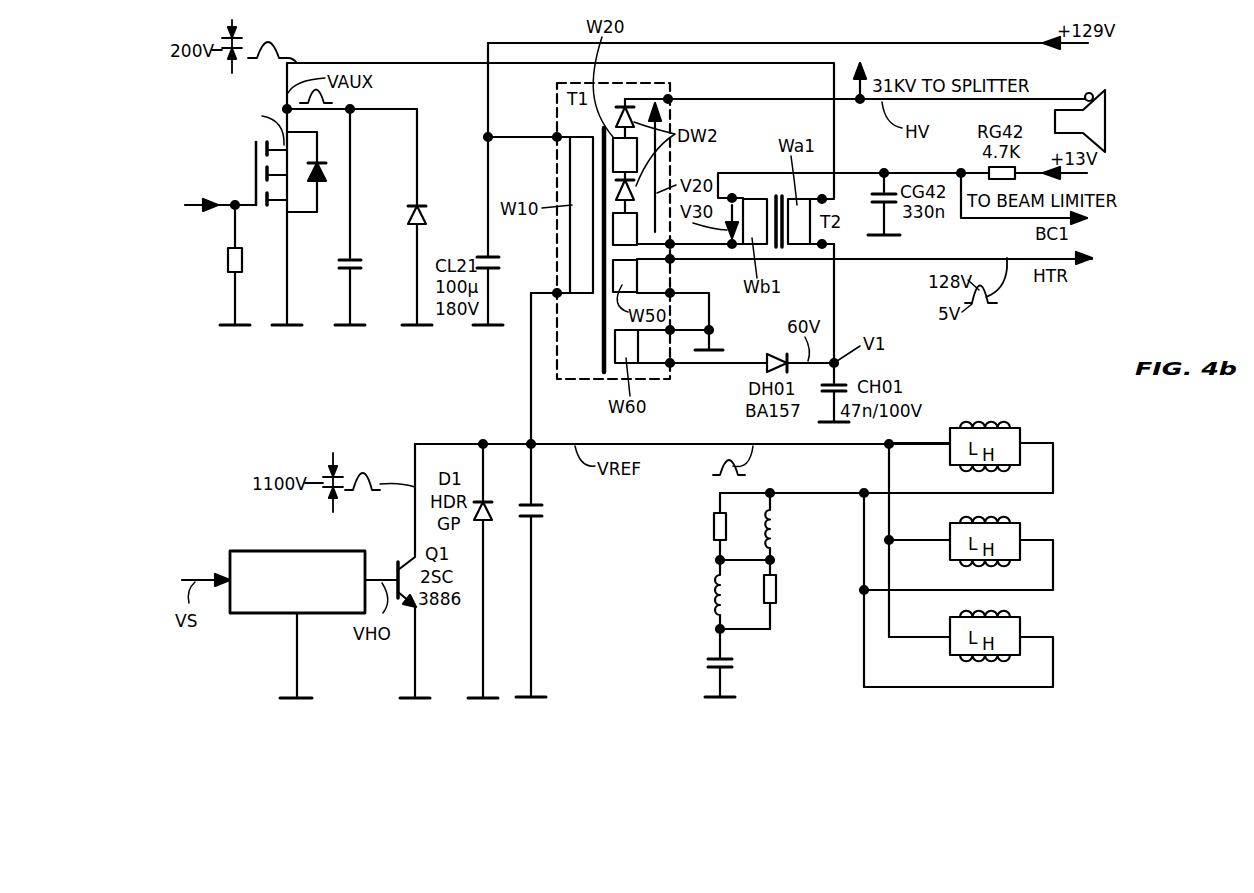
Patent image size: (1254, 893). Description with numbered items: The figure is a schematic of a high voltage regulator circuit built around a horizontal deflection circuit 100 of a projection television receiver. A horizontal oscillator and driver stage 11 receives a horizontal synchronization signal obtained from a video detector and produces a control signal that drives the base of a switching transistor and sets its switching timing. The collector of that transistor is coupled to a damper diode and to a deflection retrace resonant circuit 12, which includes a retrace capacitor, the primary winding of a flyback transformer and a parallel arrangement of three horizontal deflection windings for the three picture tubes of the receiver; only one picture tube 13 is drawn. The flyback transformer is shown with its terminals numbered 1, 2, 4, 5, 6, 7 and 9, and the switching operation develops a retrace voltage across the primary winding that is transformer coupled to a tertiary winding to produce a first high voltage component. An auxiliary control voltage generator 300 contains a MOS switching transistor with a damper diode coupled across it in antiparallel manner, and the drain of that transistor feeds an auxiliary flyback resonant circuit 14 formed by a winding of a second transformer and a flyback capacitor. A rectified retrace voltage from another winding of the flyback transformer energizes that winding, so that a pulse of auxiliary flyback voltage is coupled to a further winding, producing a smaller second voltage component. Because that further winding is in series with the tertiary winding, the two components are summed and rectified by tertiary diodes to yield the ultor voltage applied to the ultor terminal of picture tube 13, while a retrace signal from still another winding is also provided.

The horizontal oscillator and driver stage 11 is at (298, 551).
The deflection retrace resonant circuit 12 is at (652, 566).
The picture tube 13 is at (1100, 91).
The auxiliary flyback resonant circuit 14 is at (410, 105).
The horizontal deflection circuit 100 is at (632, 631).
The auxiliary control voltage generator 300 is at (333, 241).
The transformer T1 terminal 1 is at (680, 341).
The transformer T1 terminal 2 is at (527, 128).
The transformer T1 terminal 4 is at (852, 272).
The transformer T1 terminal 5 is at (675, 311).
The transformer T1 terminal 6 is at (550, 285).
The transformer T1 terminal 7 is at (690, 236).
The transformer T1 terminal 9 is at (702, 373).